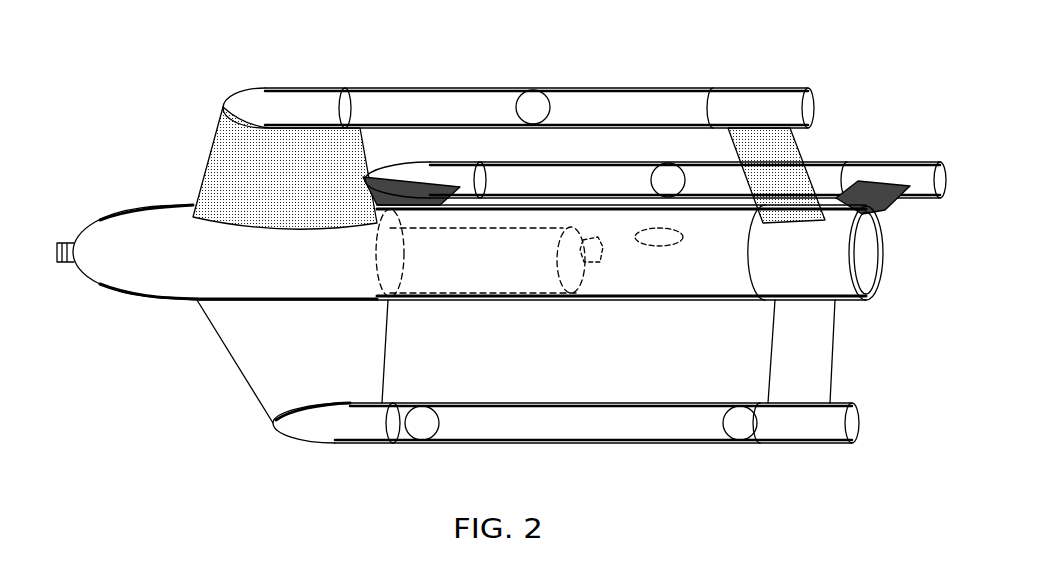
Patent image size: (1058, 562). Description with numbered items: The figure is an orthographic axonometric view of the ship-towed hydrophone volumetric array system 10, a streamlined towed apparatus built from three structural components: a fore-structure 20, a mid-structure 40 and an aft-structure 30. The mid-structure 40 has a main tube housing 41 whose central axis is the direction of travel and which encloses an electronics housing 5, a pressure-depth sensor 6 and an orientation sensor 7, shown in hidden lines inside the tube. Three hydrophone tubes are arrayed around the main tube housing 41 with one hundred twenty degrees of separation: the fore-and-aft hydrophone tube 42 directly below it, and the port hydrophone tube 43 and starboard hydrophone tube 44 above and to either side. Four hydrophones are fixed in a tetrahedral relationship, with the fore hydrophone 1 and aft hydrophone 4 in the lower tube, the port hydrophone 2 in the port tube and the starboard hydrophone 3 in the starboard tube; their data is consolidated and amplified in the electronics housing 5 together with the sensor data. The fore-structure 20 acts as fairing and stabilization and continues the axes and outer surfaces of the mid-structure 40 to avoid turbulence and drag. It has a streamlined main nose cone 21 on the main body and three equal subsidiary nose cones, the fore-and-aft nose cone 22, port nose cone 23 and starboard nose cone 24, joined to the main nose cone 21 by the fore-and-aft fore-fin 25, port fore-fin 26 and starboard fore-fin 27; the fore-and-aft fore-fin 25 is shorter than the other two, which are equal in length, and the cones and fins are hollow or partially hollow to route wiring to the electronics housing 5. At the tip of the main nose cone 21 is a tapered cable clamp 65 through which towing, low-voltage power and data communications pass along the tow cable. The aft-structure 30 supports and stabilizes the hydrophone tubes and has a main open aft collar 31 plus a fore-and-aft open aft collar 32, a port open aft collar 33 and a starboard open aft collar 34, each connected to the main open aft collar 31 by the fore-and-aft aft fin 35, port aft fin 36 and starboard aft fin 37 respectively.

The ship-towed hydrophone volumetric array system 10 is at (100, 100).
The fore-structure 20 is at (118, 370).
The main nose cone 21 is at (118, 210).
The fore-and-aft nose cone 22 is at (315, 437).
The port nose cone 23 is at (265, 98).
The starboard nose cone 24 is at (422, 172).
The fore-and-aft fore-fin 25 is at (262, 380).
The port fore-fin 26 is at (220, 172).
The starboard fore-fin 27 is at (363, 177).
The aft-structure 30 is at (908, 345).
The main open aft collar 31 is at (870, 255).
The fore-and-aft open aft collar 32 is at (862, 427).
The port open aft collar 33 is at (810, 113).
The starboard open aft collar 34 is at (943, 178).
The fore-and-aft aft fin 35 is at (822, 370).
The port aft fin 36 is at (790, 153).
The starboard aft fin 37 is at (886, 205).
The mid-structure 40 is at (637, 63).
The main tube housing 41 is at (708, 301).
The fore-and-aft hydrophone tube 42 is at (650, 433).
The port hydrophone tube 43 is at (437, 90).
The starboard hydrophone tube 44 is at (606, 165).
The fore hydrophone 1 is at (423, 431).
The port hydrophone 2 is at (535, 100).
The starboard hydrophone 3 is at (665, 170).
The aft hydrophone 4 is at (740, 431).
The electronics housing 5 is at (470, 292).
The pressure-depth sensor 6 is at (668, 242).
The orientation sensor 7 is at (598, 252).
The tapered cable clamp 65 is at (59, 263).